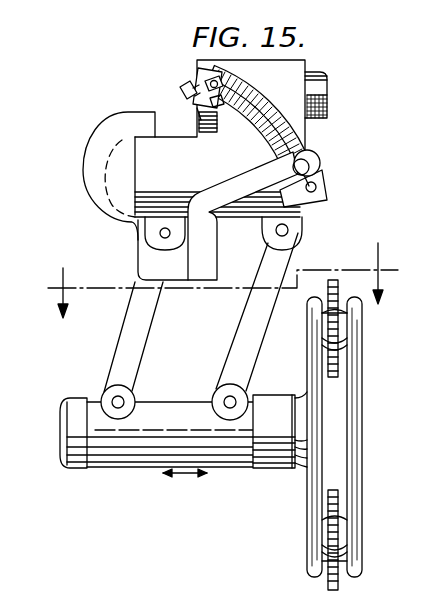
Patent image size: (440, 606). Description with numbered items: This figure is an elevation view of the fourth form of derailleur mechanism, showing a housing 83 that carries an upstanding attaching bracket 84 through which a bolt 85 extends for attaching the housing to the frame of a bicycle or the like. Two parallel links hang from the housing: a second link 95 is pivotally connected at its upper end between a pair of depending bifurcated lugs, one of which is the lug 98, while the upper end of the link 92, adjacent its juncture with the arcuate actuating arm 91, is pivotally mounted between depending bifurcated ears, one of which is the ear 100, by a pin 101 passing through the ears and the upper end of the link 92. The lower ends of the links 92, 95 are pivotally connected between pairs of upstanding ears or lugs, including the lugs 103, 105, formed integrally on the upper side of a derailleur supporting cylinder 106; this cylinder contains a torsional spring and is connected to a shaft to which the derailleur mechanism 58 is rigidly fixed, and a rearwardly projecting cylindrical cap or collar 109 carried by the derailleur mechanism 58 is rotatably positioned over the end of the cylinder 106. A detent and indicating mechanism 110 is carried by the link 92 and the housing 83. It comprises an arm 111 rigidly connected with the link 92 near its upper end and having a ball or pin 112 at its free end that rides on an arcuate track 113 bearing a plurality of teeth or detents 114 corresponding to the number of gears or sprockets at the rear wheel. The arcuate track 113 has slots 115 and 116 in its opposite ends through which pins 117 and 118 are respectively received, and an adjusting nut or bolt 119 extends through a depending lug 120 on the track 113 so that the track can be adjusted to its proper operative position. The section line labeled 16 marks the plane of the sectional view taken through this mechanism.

The section line 16- 16 is at (220, 282).
The derailleur mechanism 58 is at (367, 429).
The housing 83 is at (192, 137).
The attaching bracket 84 is at (220, 68).
The bolt 85 is at (323, 72).
The arcuate actuating arm 91 is at (84, 166).
The link 92 is at (152, 336).
The second link 95 is at (283, 262).
The depending bifurcated lug 98 is at (262, 238).
The depending bifurcated lug 100 is at (158, 232).
The pin 101 is at (160, 237).
The upstanding lug 103 is at (102, 382).
The upstanding lug 105 is at (218, 383).
The derailleur supporting cylinder 106 is at (112, 466).
The cylindrical cap or collar 109 is at (272, 472).
The detent and indicating mechanism 110 is at (333, 156).
The arm 111 is at (220, 192).
The ball or pin 112 is at (312, 151).
The arcuate track 113 is at (255, 92).
The teeth or detents 114 is at (256, 133).
The slot 115 is at (327, 196).
The slot 116 is at (235, 77).
The pin 117 is at (318, 184).
The pin 118 is at (209, 133).
The adjusting nut or bolt 119 is at (180, 92).
The depending lug 120 is at (198, 110).